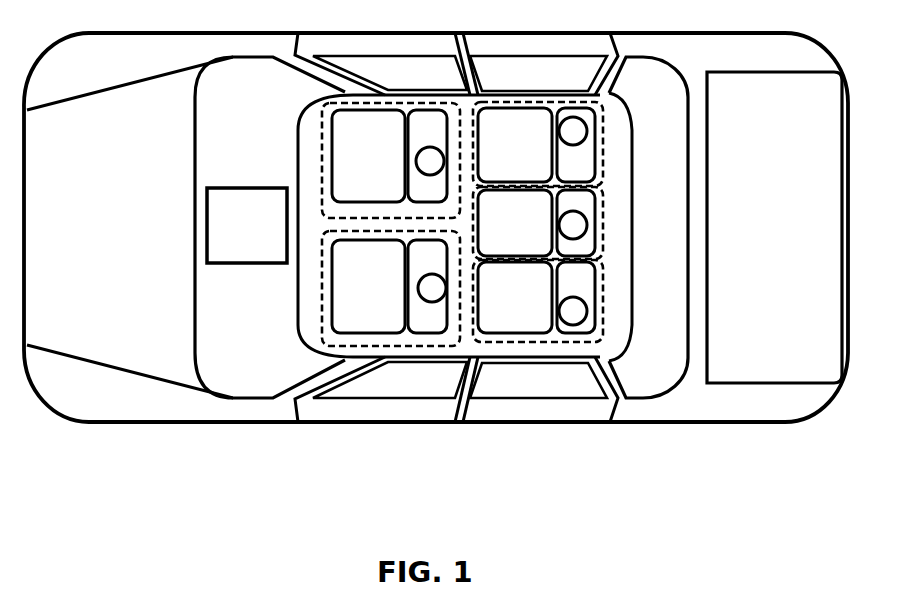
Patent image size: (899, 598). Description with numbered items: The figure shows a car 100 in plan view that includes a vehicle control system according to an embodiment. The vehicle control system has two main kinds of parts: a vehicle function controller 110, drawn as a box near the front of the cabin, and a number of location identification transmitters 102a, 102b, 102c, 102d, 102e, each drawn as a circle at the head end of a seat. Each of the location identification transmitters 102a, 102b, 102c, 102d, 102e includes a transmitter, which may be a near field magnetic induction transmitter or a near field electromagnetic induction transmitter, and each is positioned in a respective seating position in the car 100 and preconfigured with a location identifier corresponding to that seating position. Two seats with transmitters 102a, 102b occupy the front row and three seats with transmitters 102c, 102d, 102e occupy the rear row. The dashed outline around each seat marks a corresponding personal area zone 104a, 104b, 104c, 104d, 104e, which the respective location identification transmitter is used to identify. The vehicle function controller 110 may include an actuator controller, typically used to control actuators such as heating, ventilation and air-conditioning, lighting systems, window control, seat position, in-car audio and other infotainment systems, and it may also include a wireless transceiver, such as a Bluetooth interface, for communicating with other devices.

The car 100 is at (443, 515).
The location identification transmitter 102a is at (432, 148).
The location identification transmitter 102b is at (426, 279).
The location identification transmitter 102c is at (550, 118).
The location identification transmitter 102d is at (553, 212).
The location identification transmitter 102e is at (556, 285).
The personal area zone 104a is at (321, 128).
The personal area zone 104b is at (322, 313).
The personal area zone 104c is at (603, 140).
The personal area zone 104d is at (603, 225).
The personal area zone 104e is at (603, 292).
The vehicle function controller 110 is at (207, 212).